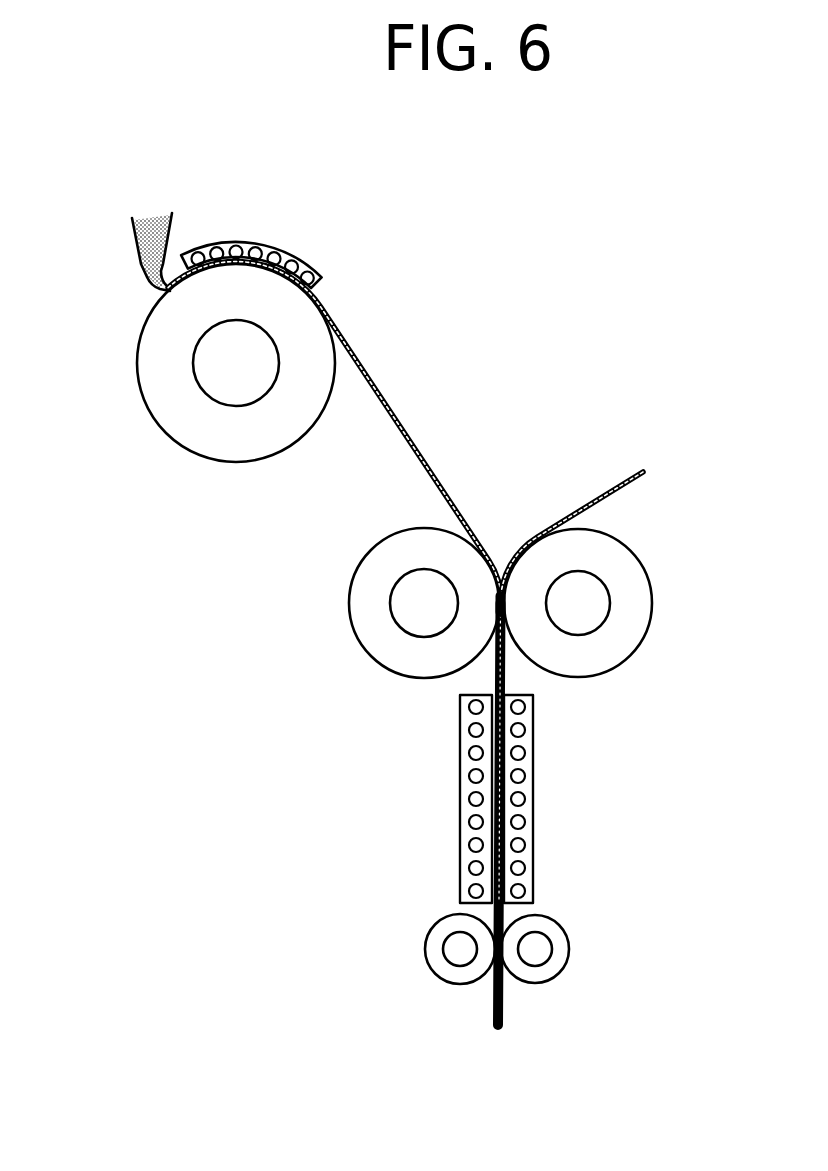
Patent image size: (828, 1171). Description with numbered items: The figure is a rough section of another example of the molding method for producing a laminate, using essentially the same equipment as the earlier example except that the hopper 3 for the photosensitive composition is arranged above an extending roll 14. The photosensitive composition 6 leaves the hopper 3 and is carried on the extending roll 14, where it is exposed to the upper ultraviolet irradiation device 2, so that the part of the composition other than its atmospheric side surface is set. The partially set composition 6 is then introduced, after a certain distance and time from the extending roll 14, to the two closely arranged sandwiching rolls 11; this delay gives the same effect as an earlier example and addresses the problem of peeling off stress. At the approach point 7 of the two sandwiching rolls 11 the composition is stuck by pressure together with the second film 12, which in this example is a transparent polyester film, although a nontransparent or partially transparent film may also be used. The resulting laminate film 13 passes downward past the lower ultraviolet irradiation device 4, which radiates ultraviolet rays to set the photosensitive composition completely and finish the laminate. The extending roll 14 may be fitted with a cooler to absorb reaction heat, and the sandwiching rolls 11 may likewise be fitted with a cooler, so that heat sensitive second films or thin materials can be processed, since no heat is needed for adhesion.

The upper ultraviolet irradiation device 2 is at (272, 245).
The hopper 3 is at (131, 218).
The powder material 6 is at (150, 223).
The extending roll 14 is at (163, 412).
The sandwiching rolls 11 is at (358, 627).
The second film 12 is at (579, 508).
The laminate film 13 is at (495, 673).
The approach point 7 is at (506, 606).
The lower ultraviolet irradiation device 4 is at (462, 850).